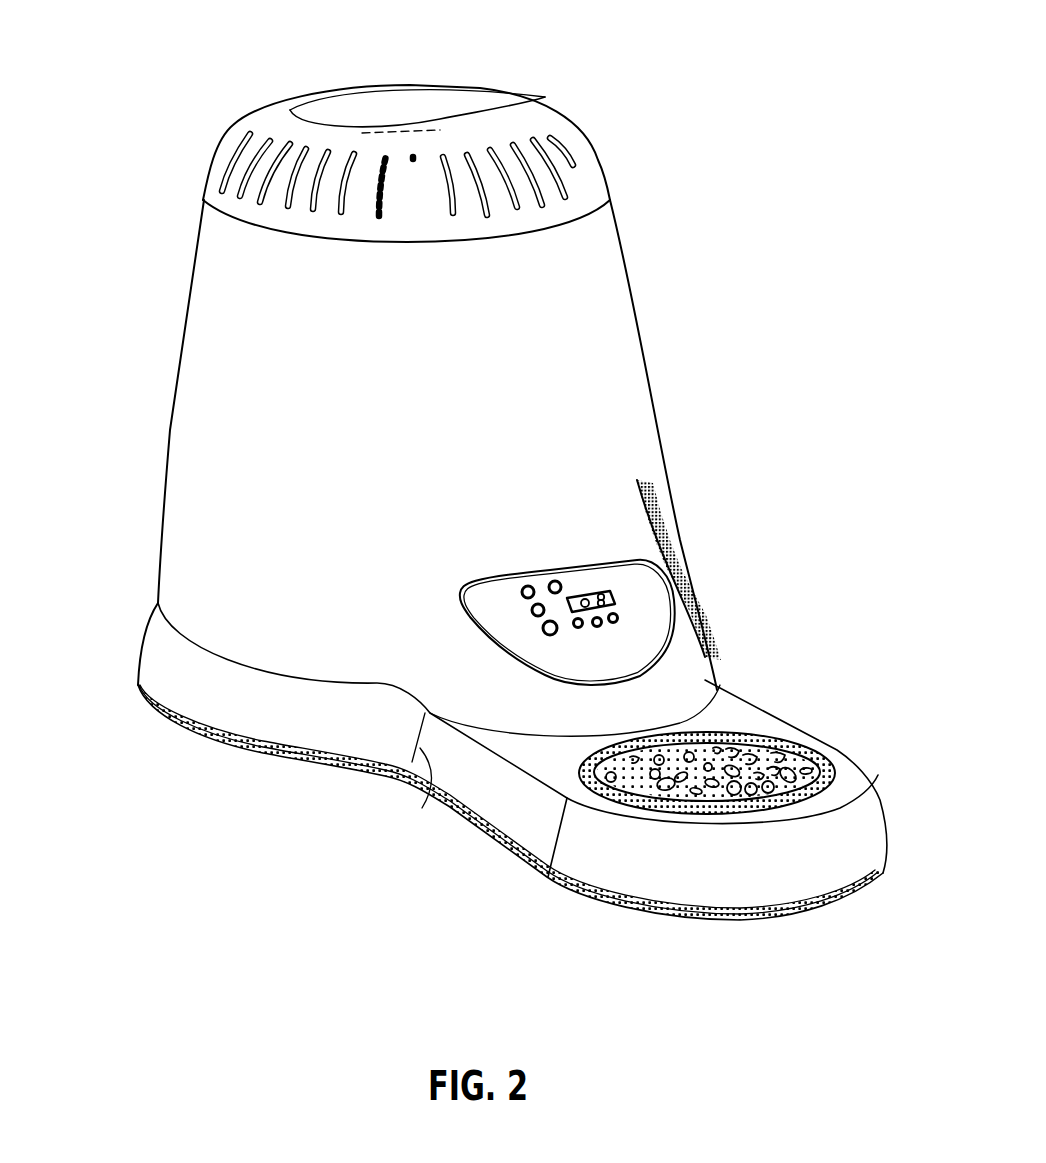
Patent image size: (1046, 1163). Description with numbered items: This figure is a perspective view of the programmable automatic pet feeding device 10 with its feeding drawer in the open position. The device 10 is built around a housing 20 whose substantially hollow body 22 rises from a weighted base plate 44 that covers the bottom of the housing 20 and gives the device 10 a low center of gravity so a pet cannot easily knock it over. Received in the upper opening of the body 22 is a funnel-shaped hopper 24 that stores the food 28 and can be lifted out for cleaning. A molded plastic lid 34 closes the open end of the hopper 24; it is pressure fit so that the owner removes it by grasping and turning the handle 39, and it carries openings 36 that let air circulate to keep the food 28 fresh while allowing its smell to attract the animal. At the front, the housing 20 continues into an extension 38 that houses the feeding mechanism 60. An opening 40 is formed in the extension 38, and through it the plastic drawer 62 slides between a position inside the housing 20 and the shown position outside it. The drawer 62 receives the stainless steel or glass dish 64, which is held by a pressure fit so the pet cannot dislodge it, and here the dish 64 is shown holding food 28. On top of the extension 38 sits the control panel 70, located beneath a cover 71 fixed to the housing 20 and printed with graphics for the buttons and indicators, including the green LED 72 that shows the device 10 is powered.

The programmable automatic pet feeding device 10 is at (110, 204).
The housing 20 is at (678, 343).
The body 22 is at (195, 458).
The hopper 24 is at (593, 423).
The food 28 is at (757, 767).
The lid 34 is at (605, 192).
The openings 36 is at (287, 193).
The extension 38 is at (690, 676).
The handle 39 is at (320, 127).
The opening 40 is at (418, 795).
The base plate 44 is at (230, 745).
The feeding mechanism 60 is at (675, 937).
The drawer 62 is at (867, 825).
The dish 64 is at (738, 745).
The control panel 70 is at (655, 618).
The cover 71 is at (643, 587).
The green LED 72 is at (607, 592).